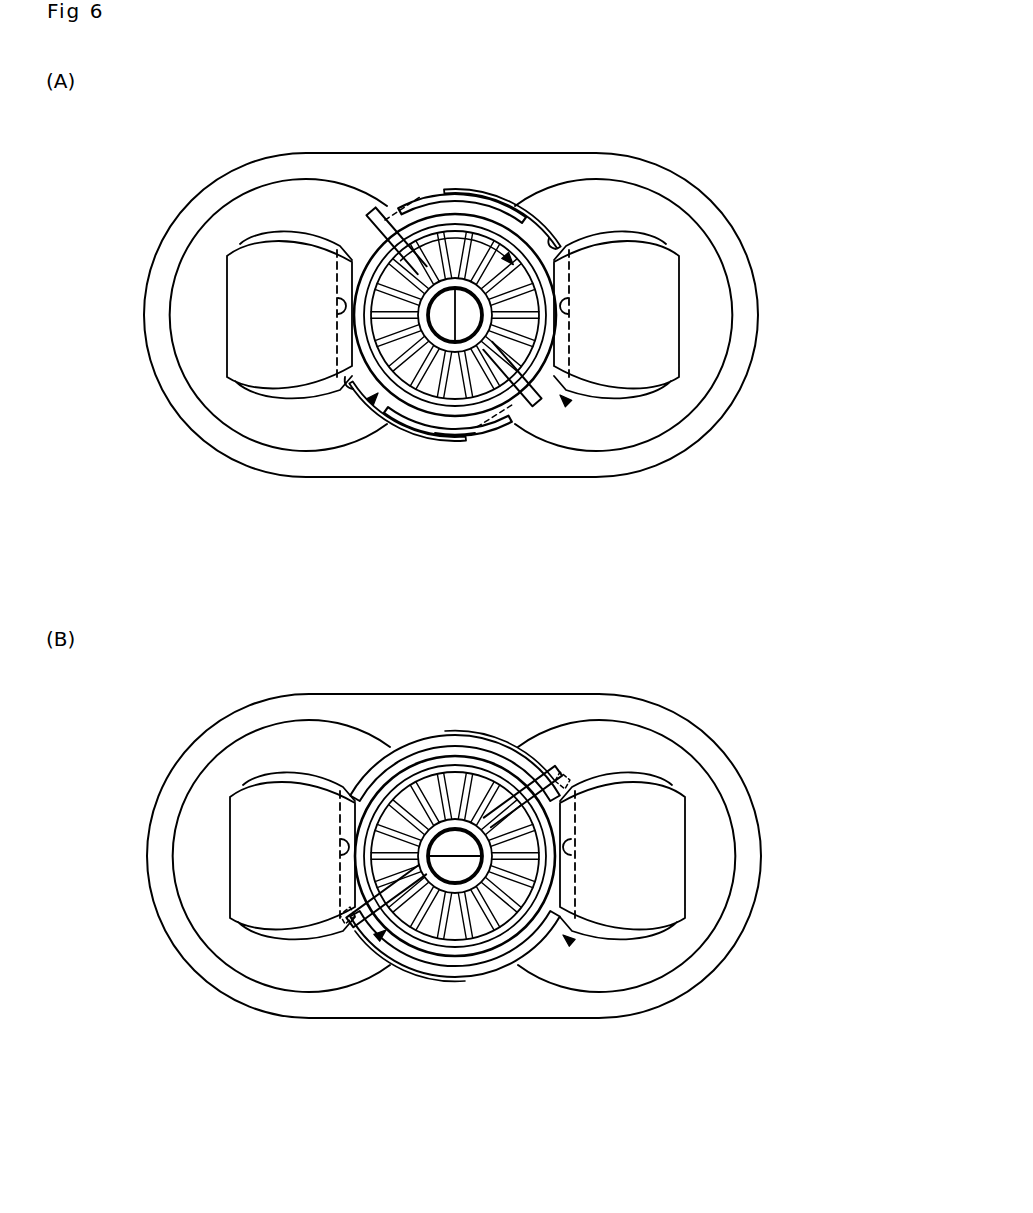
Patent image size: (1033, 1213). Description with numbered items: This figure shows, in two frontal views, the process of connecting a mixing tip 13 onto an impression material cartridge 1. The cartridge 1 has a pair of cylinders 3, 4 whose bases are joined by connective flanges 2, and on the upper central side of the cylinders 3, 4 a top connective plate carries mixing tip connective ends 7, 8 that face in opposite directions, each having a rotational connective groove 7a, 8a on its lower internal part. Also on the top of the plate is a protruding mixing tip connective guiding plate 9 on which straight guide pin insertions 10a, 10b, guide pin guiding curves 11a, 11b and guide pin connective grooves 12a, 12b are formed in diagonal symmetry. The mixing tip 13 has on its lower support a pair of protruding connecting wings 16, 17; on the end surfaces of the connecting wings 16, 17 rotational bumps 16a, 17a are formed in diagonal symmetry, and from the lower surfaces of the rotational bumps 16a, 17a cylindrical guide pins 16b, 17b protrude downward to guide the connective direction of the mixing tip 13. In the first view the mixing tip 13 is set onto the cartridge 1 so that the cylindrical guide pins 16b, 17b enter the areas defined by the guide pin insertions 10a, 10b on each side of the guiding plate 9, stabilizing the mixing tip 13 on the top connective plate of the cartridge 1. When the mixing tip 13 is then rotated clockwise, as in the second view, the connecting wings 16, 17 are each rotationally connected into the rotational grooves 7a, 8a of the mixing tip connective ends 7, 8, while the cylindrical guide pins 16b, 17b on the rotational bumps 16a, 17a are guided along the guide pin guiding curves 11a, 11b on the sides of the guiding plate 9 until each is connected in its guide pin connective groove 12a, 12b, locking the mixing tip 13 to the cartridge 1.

The impression material cartridge 1 is at (262, 158).
The connective flanges 2 is at (720, 403).
The cylinder 3 is at (272, 207).
The cylinder 4 is at (647, 207).
The mixing tip connective end 7 is at (253, 348).
The rotational connective groove 7a is at (340, 313).
The mixing tip connective end 8 is at (655, 345).
The rotational connective groove 8a is at (563, 323).
The mixing tip connective guiding plate 9 is at (565, 392).
The guide pin insertion 10a is at (550, 392).
The guide pin insertion 10b is at (360, 243).
The guide pin guiding curve 11a is at (417, 435).
The guide pin guiding curve 11b is at (490, 198).
The guide pin connective groove 12a is at (347, 383).
The guide pin connective groove 12b is at (553, 242).
The mixing tip 13 is at (373, 398).
The connecting wing 16 is at (448, 425).
The rotational bump 16a is at (512, 423).
The cylindrical guide pin 16b is at (527, 428).
The connecting wing 17 is at (457, 205).
The rotational bump 17a is at (392, 212).
The cylindrical guide pin 17b is at (387, 213).